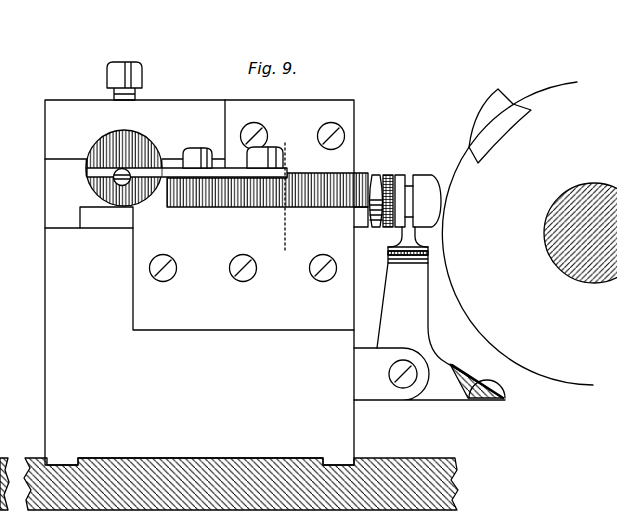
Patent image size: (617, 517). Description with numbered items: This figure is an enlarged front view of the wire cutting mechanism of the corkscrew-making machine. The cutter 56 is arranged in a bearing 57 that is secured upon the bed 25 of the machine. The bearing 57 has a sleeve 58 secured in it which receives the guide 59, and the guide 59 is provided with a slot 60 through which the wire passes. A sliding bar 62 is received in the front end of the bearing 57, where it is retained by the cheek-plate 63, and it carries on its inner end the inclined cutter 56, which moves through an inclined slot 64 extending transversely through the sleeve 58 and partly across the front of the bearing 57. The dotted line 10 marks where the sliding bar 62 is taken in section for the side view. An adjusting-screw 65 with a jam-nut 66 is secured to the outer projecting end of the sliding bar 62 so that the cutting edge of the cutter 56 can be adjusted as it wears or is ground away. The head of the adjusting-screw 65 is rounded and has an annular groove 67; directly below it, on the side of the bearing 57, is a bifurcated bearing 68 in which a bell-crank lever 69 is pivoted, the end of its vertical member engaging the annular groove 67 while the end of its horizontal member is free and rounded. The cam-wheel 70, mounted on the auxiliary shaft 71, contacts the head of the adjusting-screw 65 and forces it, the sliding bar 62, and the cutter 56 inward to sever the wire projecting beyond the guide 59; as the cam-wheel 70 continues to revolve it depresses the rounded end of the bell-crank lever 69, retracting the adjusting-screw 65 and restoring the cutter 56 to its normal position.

The dotted line 10 is at (296, 197).
The bed 25 is at (424, 454).
The cutter 56 is at (196, 190).
The bearing 57 is at (199, 263).
The sleeve 58 is at (108, 133).
The guide 59 is at (94, 188).
The slot 60 is at (118, 187).
The sliding bar 62 is at (323, 188).
The cheek-plate 63 is at (217, 227).
The inclined slot 64 is at (86, 176).
The adjusting-screw 65 is at (386, 176).
The jam-nut 66 is at (375, 174).
The annular groove 67 is at (404, 176).
The bifurcated bearing 68 is at (382, 388).
The bell-crank lever 69 is at (441, 312).
The cam-wheel 70 is at (517, 233).
The auxiliary shaft 71 is at (556, 254).